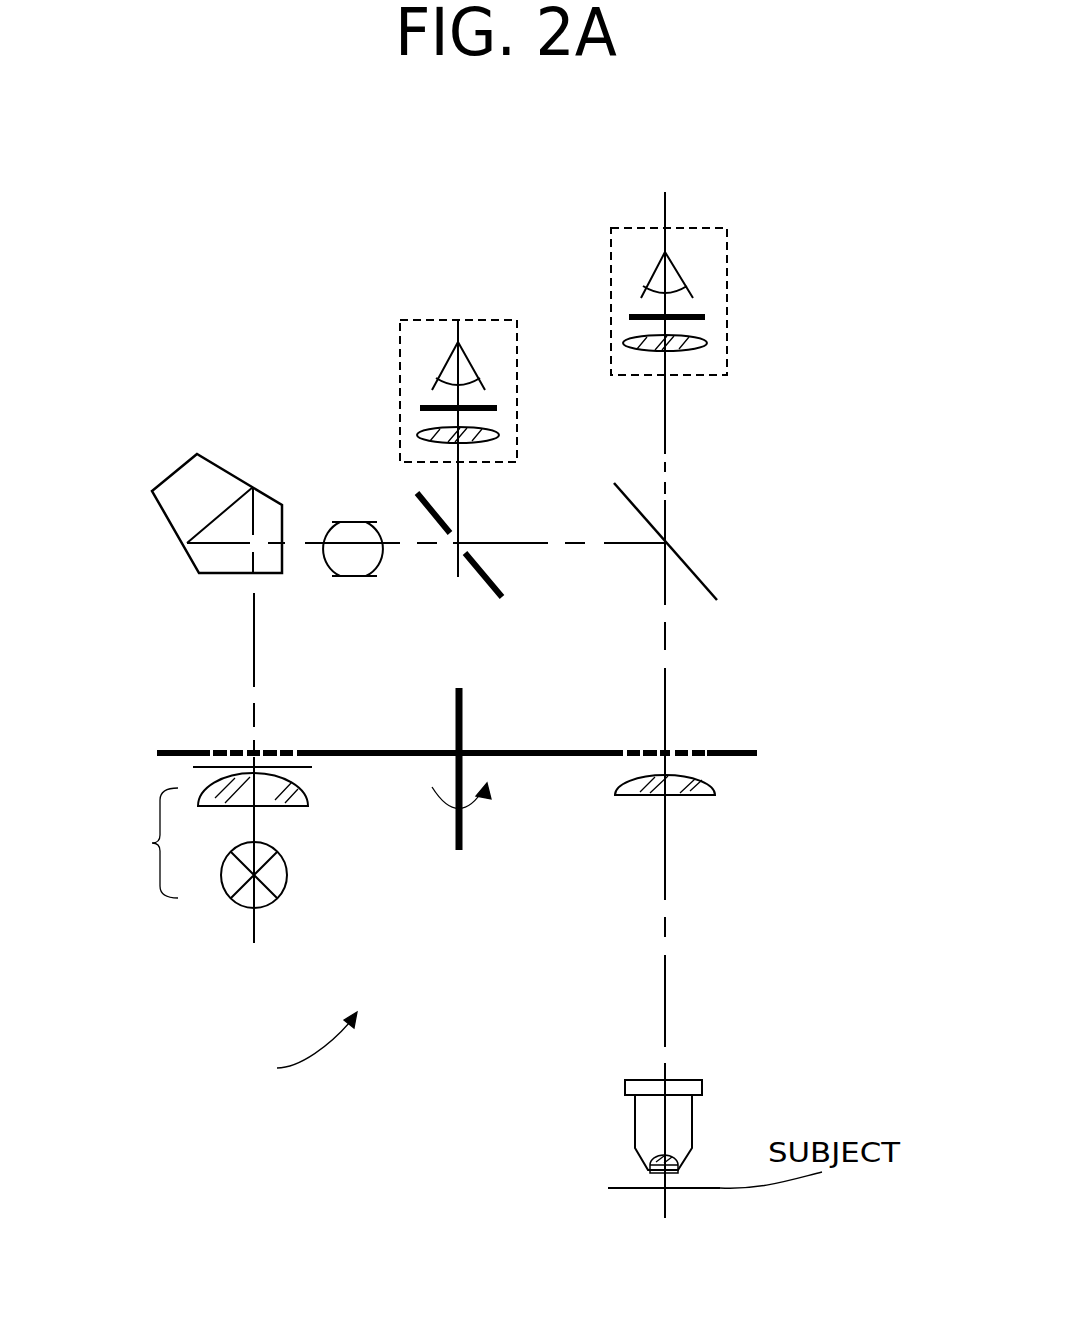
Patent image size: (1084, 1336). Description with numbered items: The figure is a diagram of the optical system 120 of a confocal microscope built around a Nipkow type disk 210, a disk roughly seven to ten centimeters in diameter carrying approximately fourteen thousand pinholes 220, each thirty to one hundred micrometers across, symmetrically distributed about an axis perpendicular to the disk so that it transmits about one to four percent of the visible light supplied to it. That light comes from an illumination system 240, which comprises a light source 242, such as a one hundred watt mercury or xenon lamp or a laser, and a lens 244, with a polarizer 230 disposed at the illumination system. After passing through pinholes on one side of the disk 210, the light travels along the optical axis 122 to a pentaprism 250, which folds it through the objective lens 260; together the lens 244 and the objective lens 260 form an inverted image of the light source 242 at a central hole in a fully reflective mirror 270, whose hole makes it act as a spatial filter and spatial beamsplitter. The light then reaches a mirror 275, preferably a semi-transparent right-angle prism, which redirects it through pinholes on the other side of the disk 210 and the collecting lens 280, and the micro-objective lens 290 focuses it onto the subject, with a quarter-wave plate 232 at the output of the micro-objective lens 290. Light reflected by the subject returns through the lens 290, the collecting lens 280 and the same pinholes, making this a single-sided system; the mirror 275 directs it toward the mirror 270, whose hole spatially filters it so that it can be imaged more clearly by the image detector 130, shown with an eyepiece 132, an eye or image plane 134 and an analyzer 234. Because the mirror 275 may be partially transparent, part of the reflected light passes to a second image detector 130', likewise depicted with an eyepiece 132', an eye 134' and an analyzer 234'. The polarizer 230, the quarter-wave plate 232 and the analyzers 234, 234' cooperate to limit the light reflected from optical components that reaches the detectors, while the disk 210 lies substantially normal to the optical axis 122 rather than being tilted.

The optical system 120 is at (289, 1048).
The optical axis 122 is at (252, 658).
The image detector 130 is at (434, 351).
The second image detector 130' is at (645, 256).
The eyepiece 132 is at (501, 420).
The eyepiece 132' is at (721, 322).
The eye or image plane 134 is at (509, 357).
The eye 134' is at (727, 263).
The Nipkow type disk 210 is at (505, 750).
The pinholes 220 is at (210, 750).
The polarizer 230 is at (312, 767).
The quarter-wave plate 232 is at (648, 1165).
The analyzer 234 is at (408, 385).
The analyzer 234' is at (617, 294).
The illumination system 240 is at (136, 843).
The light source 242 is at (285, 890).
The lens 244 is at (295, 806).
The pentaprism 250 is at (207, 457).
The objective lens 260 is at (352, 522).
The fully reflective mirror 270 is at (500, 588).
The mirror 275 is at (700, 580).
The collecting lens 280 is at (715, 795).
The micro-objective lens 290 is at (692, 1120).